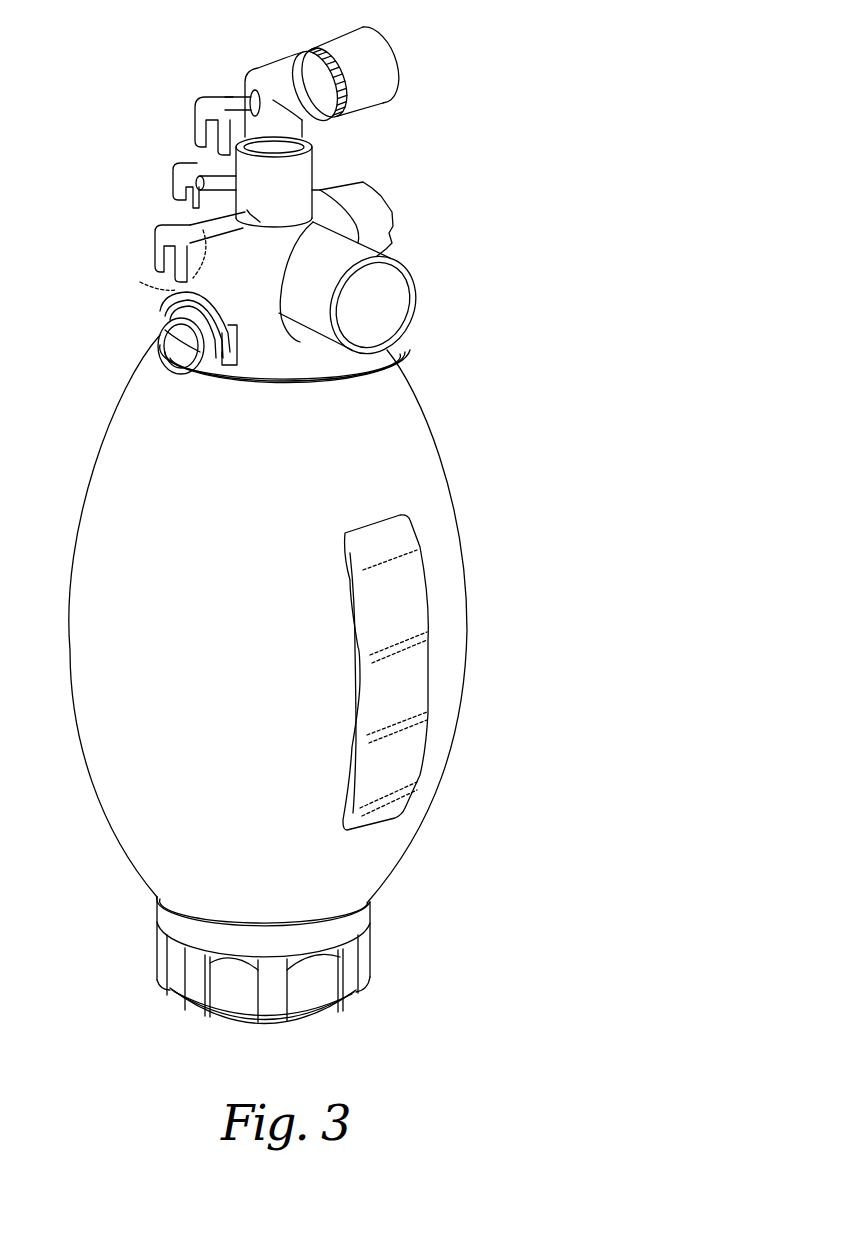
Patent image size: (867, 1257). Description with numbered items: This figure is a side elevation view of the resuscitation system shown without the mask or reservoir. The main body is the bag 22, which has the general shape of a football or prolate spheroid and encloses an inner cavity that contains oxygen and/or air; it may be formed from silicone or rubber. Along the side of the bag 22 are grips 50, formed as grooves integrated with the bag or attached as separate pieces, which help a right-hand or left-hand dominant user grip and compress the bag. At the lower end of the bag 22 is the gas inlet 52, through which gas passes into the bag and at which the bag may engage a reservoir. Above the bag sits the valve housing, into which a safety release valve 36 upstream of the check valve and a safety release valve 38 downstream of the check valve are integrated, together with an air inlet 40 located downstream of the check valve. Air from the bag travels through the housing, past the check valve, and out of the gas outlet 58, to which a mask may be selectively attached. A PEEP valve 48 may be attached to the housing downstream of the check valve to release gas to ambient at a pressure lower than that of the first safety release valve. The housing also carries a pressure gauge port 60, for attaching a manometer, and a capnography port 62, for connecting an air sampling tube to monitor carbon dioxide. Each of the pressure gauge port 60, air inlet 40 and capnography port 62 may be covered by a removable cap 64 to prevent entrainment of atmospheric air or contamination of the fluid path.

The bag 22 is at (126, 487).
The safety release valve 36 is at (163, 330).
The safety release valve 38 is at (375, 208).
The air inlet 40 is at (205, 300).
The PEEP valve 48 is at (378, 312).
The grips 50 is at (385, 607).
The gas inlet 52 is at (205, 1022).
The gas outlet 58 is at (430, 50).
The pressure gauge port 60 is at (190, 165).
The capnography port 62 is at (245, 82).
The cap 64 is at (212, 90).